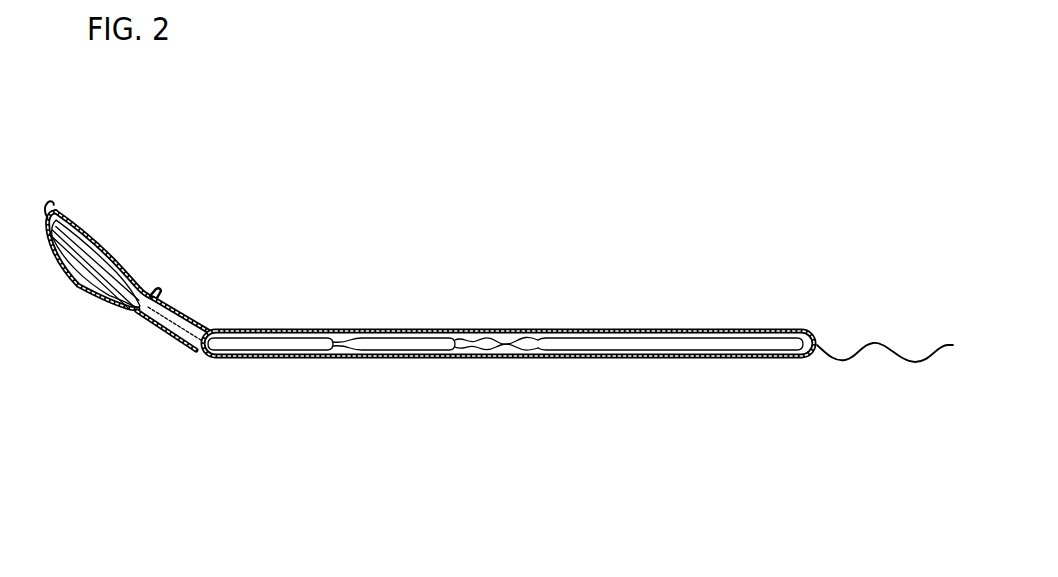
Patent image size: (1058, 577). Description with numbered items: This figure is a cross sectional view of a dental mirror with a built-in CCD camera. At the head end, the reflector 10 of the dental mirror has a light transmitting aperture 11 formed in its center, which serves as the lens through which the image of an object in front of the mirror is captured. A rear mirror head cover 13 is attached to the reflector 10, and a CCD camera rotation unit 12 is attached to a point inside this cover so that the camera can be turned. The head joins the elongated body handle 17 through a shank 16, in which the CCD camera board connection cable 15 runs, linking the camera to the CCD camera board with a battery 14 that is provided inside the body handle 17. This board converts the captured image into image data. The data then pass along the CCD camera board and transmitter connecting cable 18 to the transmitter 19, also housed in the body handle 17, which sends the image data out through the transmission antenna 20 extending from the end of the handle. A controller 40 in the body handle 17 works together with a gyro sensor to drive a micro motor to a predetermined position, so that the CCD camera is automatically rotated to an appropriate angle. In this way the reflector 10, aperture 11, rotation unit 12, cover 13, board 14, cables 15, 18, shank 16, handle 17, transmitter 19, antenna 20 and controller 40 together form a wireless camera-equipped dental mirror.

The reflector 10 is at (82, 230).
The light transmitting aperture 11 is at (110, 250).
The CCD camera rotation unit 12 is at (108, 282).
The rear mirror head cover 13 is at (72, 273).
The CCD camera board with a battery 14 is at (263, 346).
The CCD camera board connection cable 15 is at (168, 305).
The shank 16 is at (183, 313).
The body handle 17 is at (413, 328).
The CCD camera board and transmitter connecting cable 18 is at (508, 338).
The transmitter 19 is at (570, 346).
The transmission antenna 20 is at (895, 354).
The controller 40 is at (397, 346).